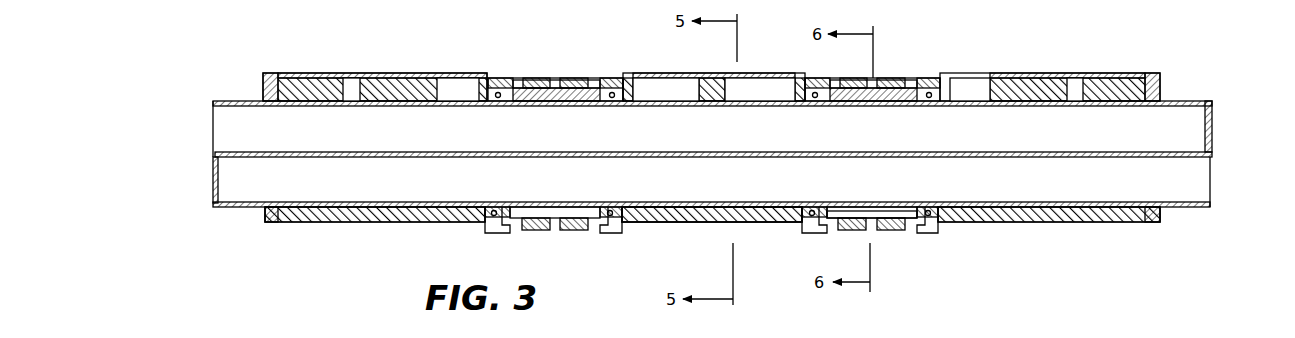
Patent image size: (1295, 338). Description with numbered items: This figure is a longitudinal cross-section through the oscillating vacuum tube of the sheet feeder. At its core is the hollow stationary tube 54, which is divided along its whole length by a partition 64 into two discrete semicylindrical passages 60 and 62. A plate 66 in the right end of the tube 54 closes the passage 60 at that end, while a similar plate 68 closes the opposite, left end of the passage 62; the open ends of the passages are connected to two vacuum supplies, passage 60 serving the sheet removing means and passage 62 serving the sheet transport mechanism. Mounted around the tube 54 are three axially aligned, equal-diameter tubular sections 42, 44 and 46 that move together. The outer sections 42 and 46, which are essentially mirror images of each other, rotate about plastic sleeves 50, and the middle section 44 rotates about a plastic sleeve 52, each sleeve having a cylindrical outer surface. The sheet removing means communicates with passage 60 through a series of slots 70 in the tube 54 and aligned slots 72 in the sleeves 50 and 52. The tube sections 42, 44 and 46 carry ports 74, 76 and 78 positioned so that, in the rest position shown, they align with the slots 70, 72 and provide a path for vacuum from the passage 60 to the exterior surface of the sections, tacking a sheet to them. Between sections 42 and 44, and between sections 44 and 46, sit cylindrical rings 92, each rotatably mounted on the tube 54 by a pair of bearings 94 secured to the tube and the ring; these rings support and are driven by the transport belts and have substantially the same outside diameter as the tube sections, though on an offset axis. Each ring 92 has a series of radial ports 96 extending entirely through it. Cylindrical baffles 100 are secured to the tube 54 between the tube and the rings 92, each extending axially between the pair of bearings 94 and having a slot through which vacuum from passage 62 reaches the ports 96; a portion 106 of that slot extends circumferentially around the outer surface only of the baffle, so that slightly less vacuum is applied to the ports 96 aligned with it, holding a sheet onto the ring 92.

The tubular section 42 is at (288, 70).
The tubular section 44 is at (700, 220).
The tubular section 46 is at (1124, 73).
The plastic sleeve 50 is at (271, 88).
The plastic sleeve 52 is at (698, 81).
The tube 54 is at (1198, 207).
The passage 60 is at (213, 124).
The passage 62 is at (1190, 190).
The partition 64 is at (215, 154).
The plate 66 is at (1212, 120).
The plate 68 is at (213, 185).
The slot 70 is at (356, 103).
The slot 72 is at (348, 97).
The port 74 is at (356, 72).
The port 76 is at (466, 76).
The port 78 is at (648, 67).
The ring 92 is at (608, 230).
The bearing 94 is at (494, 207).
The port 96 is at (724, 157).
The baffle 100 is at (715, 141).
The slot portion 106 is at (846, 209).